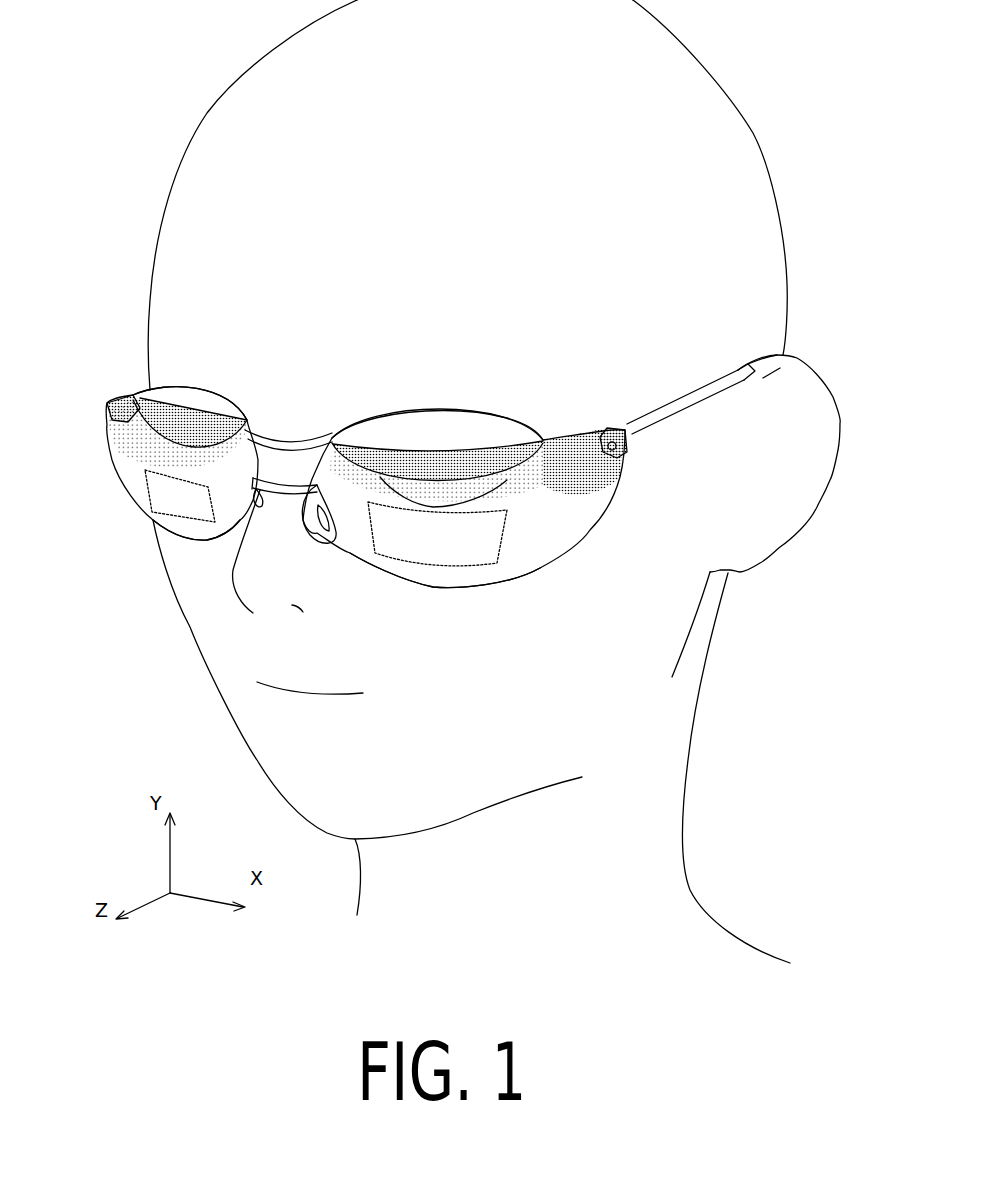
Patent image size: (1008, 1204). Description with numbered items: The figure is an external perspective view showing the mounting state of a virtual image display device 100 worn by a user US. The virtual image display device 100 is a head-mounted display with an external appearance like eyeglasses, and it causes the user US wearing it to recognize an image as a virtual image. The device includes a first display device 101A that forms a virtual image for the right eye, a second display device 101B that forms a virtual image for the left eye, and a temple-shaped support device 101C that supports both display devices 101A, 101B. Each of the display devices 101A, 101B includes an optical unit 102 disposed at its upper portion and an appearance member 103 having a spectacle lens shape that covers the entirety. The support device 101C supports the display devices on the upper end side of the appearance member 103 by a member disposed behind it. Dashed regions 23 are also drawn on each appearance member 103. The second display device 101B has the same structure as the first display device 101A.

The user US is at (765, 165).
The virtual image display device 100 is at (456, 345).
The first display device 101A is at (212, 393).
The second display device 101B is at (504, 404).
The support device 101C is at (133, 394).
The optical unit 102 is at (187, 390).
The appearance member 103 is at (200, 535).
The display region 23 is at (161, 511).